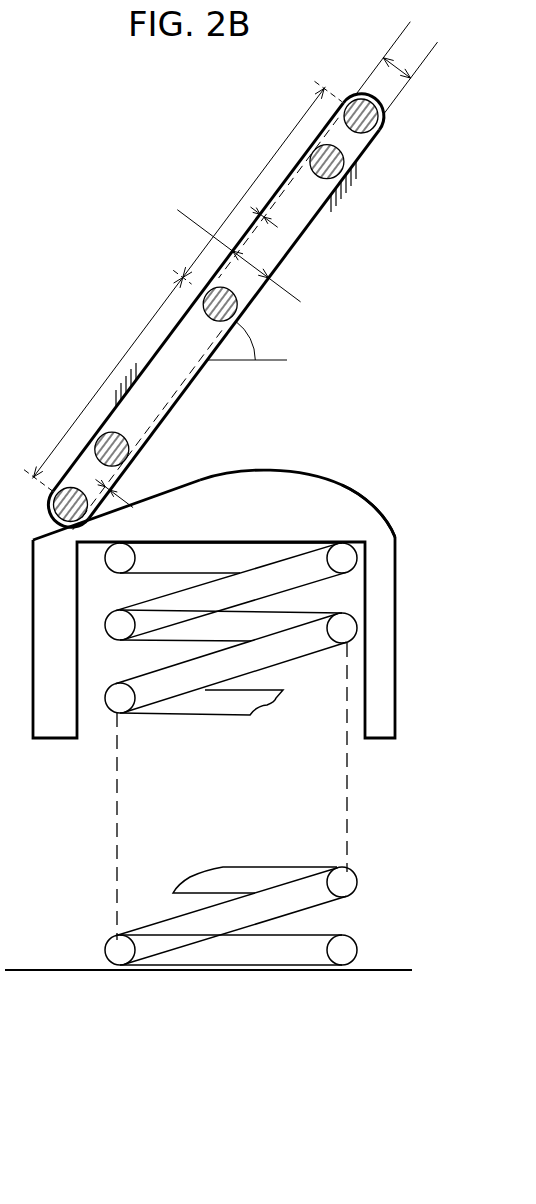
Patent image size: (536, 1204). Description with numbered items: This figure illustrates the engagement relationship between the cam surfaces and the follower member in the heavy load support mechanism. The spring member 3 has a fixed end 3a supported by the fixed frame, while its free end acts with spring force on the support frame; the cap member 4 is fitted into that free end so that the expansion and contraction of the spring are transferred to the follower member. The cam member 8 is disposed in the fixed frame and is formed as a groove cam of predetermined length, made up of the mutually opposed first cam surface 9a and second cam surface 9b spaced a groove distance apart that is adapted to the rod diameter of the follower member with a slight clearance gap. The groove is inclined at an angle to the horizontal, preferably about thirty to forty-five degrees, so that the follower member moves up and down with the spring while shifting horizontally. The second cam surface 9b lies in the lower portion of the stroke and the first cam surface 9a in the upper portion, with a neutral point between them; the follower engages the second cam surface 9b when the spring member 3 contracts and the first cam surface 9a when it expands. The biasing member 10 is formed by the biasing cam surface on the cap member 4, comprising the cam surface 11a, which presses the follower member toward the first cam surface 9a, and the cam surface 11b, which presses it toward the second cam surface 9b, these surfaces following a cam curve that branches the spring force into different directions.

The cam member 8 is at (148, 213).
The first cam surface 9a is at (321, 199).
The second cam surface 9b is at (132, 393).
The biasing member 10 is at (285, 453).
The cam surface 11a is at (342, 484).
The cam surface 11b is at (205, 479).
The cap member 4 is at (385, 686).
The spring member 3 is at (163, 693).
The fixed end 3a is at (228, 950).